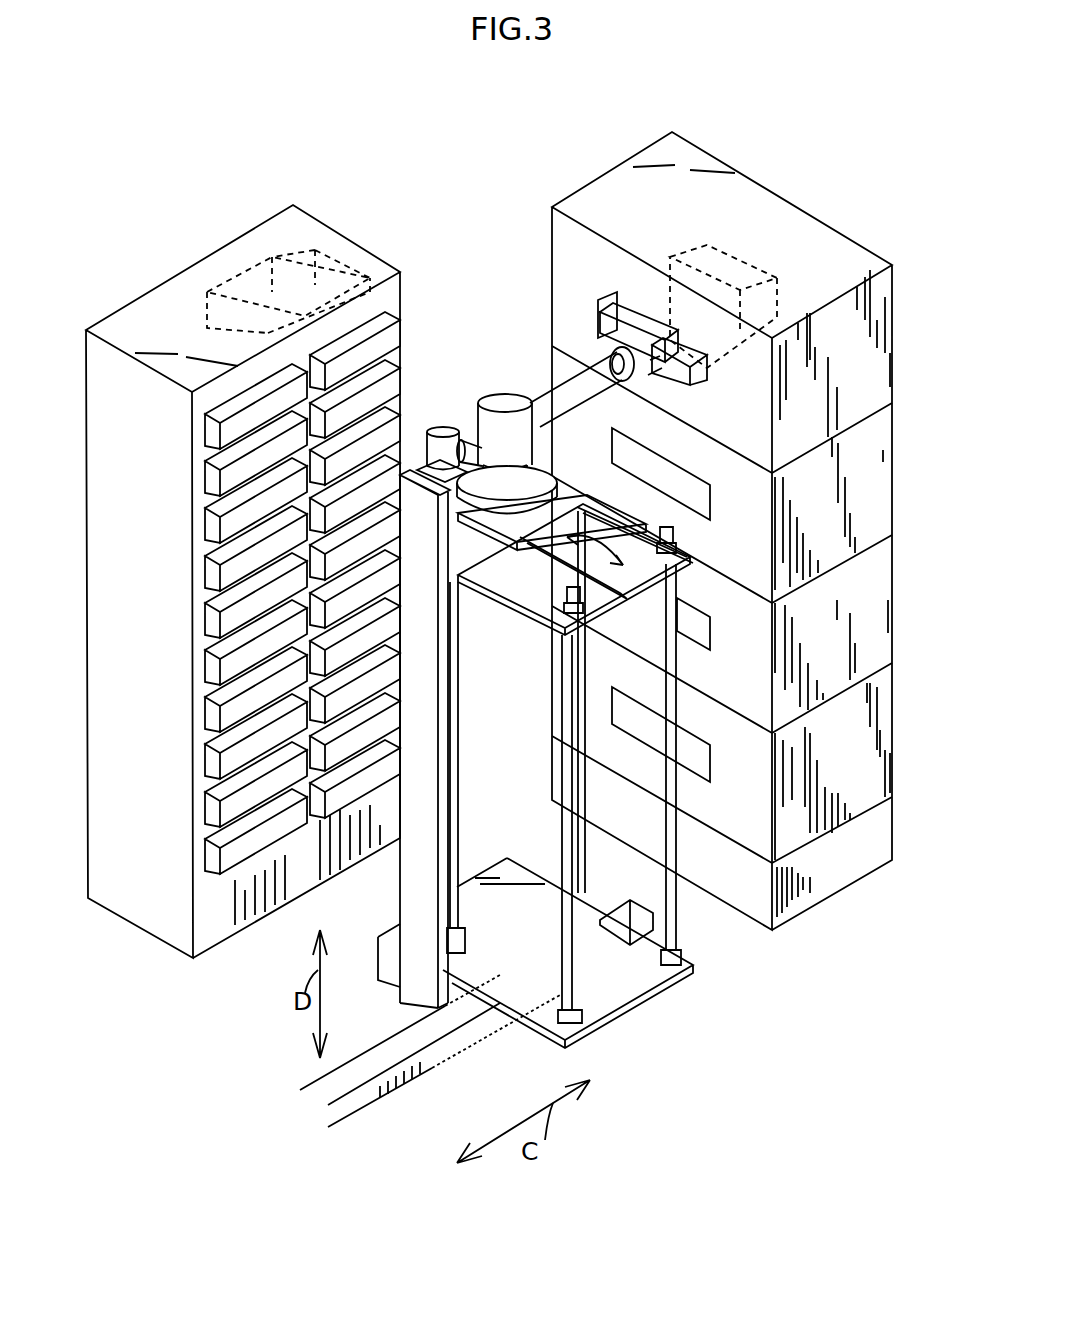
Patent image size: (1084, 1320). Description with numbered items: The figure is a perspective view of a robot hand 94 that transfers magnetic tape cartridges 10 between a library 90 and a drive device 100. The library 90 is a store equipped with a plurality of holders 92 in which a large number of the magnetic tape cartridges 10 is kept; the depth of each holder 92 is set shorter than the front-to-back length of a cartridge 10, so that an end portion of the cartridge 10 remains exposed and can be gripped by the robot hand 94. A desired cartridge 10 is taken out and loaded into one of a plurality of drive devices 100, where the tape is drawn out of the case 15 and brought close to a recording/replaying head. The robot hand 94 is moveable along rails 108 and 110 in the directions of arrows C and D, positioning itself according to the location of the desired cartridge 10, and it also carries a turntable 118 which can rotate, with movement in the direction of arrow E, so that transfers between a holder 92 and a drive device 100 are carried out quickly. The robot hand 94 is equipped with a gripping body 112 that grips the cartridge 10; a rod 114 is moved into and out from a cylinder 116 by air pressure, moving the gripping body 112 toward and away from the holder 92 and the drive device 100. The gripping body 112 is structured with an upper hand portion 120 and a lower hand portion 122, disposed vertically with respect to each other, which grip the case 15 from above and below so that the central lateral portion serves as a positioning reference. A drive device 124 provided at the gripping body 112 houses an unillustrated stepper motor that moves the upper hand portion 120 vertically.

The magnetic tape cartridge 10 is at (222, 425).
The case 15 is at (733, 264).
The library 90 is at (362, 231).
The holder 92 is at (396, 326).
The robot hand 94 is at (492, 382).
The drive device 100 is at (888, 418).
The rail 108 is at (420, 1066).
The rail 110 is at (550, 787).
The gripping body 112 is at (670, 388).
The rod 114 is at (618, 383).
The cylinder 116 is at (562, 404).
The turntable 118 is at (502, 510).
The upper hand portion 120 is at (643, 307).
The lower hand portion 122 is at (655, 368).
The drive device 124 is at (609, 300).